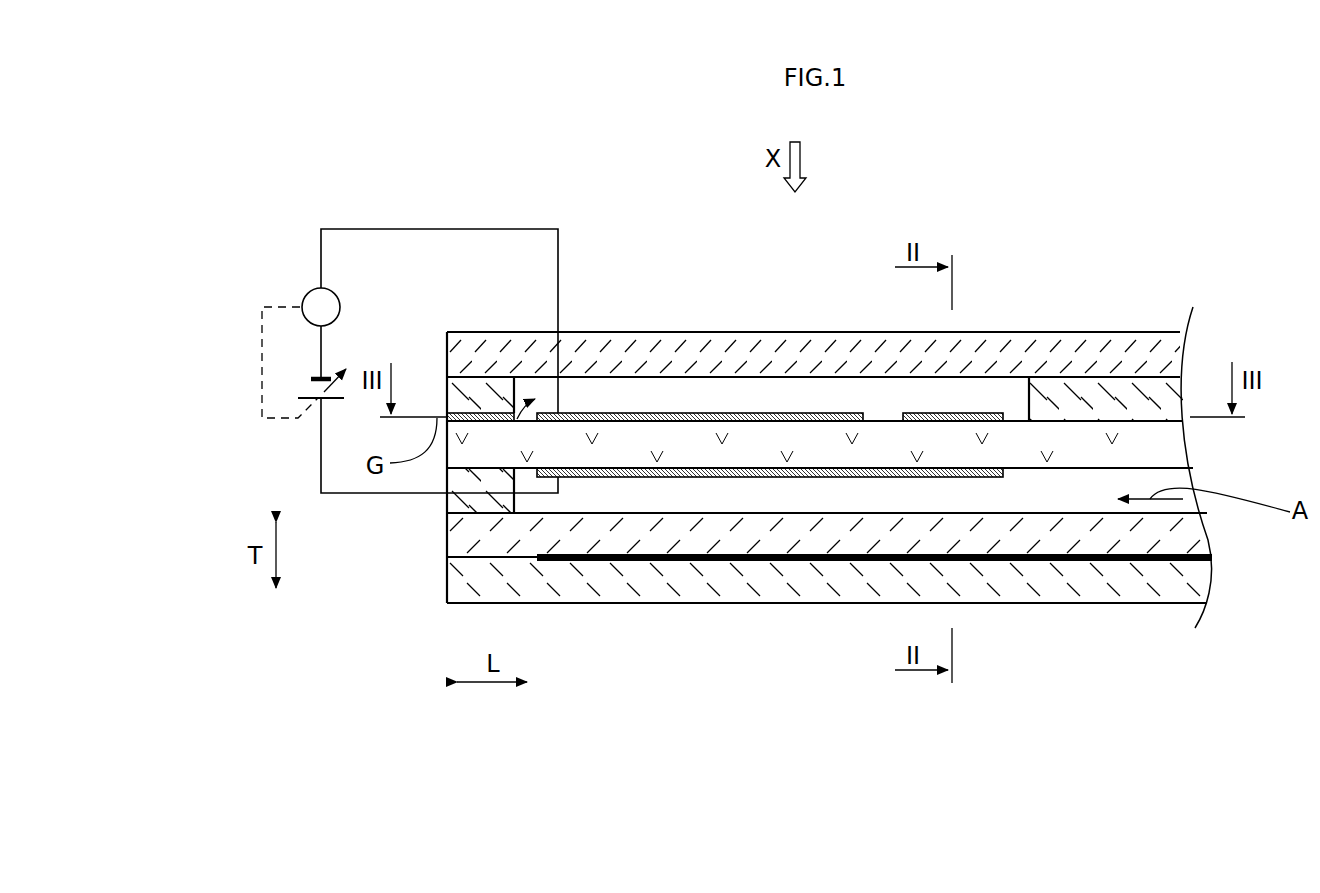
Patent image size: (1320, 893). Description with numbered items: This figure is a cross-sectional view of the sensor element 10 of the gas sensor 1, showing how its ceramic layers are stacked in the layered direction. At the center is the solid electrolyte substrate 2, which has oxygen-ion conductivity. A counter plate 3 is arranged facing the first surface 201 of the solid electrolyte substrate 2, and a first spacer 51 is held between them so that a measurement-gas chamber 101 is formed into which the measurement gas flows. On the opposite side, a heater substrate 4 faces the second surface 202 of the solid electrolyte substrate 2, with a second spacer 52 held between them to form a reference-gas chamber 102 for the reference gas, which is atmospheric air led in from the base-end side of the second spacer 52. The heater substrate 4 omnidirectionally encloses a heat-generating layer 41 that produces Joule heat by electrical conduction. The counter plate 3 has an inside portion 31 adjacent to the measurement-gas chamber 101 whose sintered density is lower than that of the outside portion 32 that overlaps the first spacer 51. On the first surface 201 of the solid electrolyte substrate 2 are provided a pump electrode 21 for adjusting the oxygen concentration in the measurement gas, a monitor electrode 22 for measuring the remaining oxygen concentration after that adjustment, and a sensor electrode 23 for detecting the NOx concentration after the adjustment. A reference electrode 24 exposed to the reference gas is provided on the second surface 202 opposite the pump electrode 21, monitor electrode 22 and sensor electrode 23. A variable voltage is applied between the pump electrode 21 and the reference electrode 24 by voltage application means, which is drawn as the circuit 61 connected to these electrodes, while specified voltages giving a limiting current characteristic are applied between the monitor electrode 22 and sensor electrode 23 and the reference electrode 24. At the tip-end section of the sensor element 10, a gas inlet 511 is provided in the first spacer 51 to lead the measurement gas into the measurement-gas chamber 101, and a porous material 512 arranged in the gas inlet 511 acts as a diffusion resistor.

The gas sensor 1 is at (1122, 290).
The solid electrolyte substrate 2 is at (740, 410).
The counter plate 3 is at (813, 286).
The inside portion 31 is at (583, 352).
The outside portion 32 is at (1082, 353).
The heater substrate 4 is at (1090, 535).
The heat-generating layer 41 is at (868, 562).
The sensor element 10 is at (1128, 610).
The pump electrode 21 is at (640, 413).
The monitor electrode 22 is at (978, 410).
The sensor electrode 23 is at (974, 328).
The reference electrode 24 is at (795, 478).
The first spacer 51 is at (490, 400).
The second spacer 52 is at (473, 502).
The gas inlet 511 is at (447, 414).
The porous material 512 is at (442, 345).
The measurement circuit 61 is at (306, 251).
The measurement-gas chamber 101 is at (823, 400).
The reference-gas chamber 102 is at (712, 490).
The first surface 201 is at (1113, 418).
The second surface 202 is at (1138, 468).